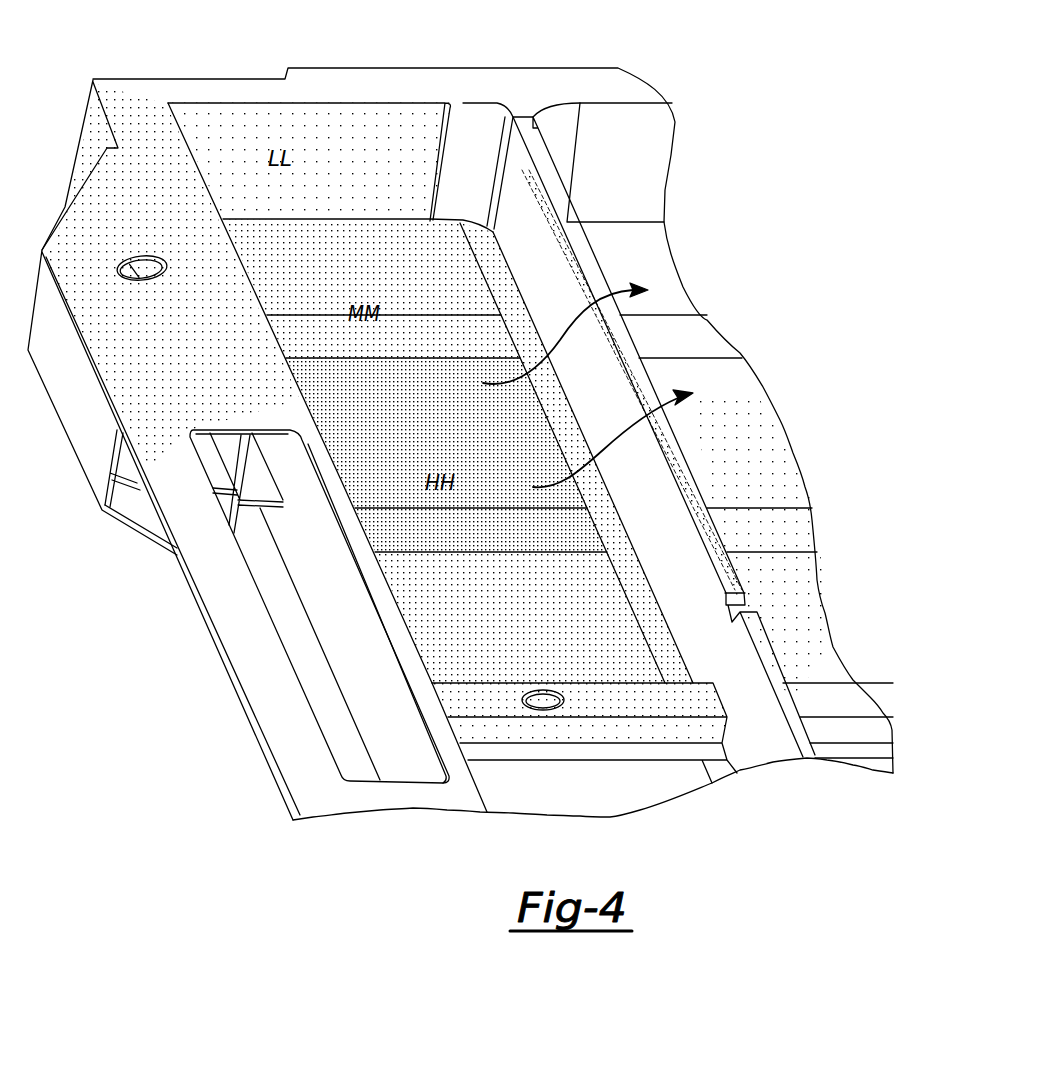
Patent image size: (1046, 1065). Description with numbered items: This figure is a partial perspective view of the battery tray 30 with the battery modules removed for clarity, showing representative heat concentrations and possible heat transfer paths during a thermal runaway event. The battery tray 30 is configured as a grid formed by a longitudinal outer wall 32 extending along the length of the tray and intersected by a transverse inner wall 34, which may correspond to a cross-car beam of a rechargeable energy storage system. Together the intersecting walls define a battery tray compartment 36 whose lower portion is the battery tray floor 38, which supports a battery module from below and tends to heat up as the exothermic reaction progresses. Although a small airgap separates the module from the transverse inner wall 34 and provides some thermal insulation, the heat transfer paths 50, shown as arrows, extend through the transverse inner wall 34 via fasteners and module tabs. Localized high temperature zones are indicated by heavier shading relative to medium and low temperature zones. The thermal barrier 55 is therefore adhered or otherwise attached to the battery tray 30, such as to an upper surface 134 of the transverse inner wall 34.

The battery tray 30 is at (735, 86).
The longitudinal outer wall 32 is at (227, 92).
The transverse inner wall 34 is at (562, 282).
The upper surface 134 is at (634, 343).
The battery tray compartment 36 is at (370, 453).
The battery tray floor 38 is at (470, 640).
The heat transfer paths 50 is at (572, 328).
The thermal barrier 55 is at (687, 450).